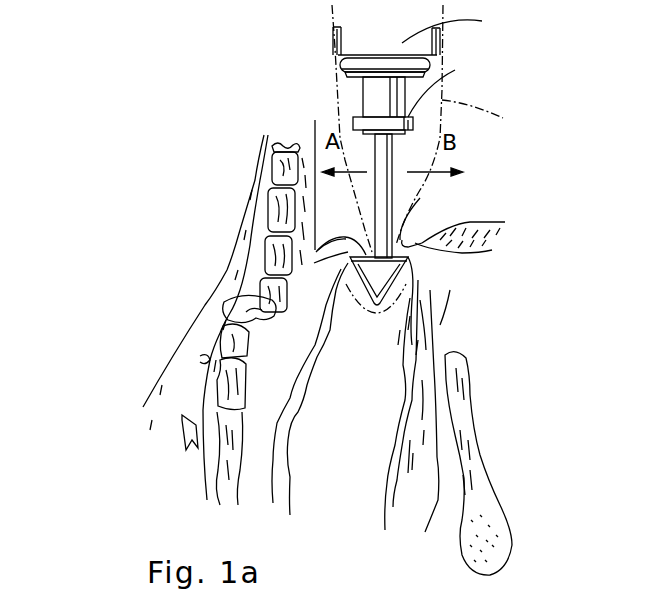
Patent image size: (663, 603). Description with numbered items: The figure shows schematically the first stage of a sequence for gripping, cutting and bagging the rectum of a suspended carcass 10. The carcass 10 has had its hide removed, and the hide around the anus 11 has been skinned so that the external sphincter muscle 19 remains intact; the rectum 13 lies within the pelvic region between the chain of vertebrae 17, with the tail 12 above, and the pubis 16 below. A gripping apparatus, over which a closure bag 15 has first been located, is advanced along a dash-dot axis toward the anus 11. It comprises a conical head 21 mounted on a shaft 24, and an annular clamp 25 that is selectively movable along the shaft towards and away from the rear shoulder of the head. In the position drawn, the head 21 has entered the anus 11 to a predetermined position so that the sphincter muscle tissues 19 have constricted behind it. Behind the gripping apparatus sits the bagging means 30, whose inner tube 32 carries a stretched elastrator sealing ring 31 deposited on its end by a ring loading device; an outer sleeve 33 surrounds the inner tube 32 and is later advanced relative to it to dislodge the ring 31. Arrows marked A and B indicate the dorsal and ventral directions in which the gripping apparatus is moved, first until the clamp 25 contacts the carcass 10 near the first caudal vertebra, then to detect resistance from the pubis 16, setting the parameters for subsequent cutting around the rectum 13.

The carcass 10 is at (136, 452).
The anus 11 is at (408, 233).
The tail 12 is at (268, 164).
The rectum 13 is at (359, 465).
The closure bag 15 is at (431, 159).
The pubis 16 is at (493, 510).
The vertebrae 17 is at (222, 392).
The external sphincter muscle 19 is at (362, 240).
The conical head 21 is at (388, 270).
The shaft 24 is at (385, 190).
The annular clamp 25 is at (454, 85).
The bagging means 30 is at (390, 157).
The elastrator sealing ring 31 is at (340, 66).
The inner tube 32 is at (350, 74).
The outer sleeve 33 is at (422, 33).